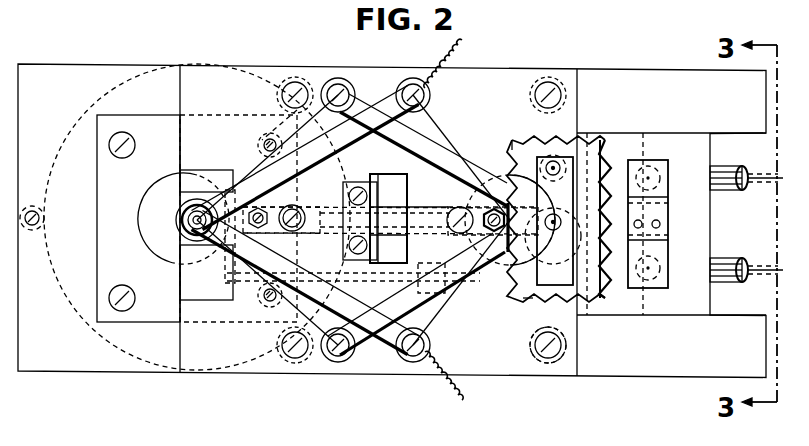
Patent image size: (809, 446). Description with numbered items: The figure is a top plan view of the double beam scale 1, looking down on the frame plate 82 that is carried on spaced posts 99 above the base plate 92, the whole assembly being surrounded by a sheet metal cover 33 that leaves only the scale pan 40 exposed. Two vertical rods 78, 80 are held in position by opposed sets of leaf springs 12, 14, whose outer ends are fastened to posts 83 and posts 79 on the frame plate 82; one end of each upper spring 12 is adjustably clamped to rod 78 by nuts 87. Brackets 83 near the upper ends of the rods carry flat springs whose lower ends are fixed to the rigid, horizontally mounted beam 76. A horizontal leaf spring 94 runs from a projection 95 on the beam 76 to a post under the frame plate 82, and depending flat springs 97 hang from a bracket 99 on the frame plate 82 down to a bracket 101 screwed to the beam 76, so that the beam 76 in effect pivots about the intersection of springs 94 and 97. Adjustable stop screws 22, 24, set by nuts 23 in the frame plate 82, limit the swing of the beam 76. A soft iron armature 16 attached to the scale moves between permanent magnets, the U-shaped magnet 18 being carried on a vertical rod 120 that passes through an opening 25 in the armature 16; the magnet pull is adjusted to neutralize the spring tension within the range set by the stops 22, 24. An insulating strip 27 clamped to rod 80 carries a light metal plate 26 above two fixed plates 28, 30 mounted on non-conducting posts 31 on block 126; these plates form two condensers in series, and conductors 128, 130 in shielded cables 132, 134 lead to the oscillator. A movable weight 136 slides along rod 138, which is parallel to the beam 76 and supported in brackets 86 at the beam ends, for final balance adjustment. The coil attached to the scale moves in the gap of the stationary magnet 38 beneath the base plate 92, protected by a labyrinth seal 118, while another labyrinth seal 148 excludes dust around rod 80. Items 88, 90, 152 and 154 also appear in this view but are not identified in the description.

The double beam scale 1 is at (445, 127).
The leaf springs 12 is at (262, 140).
The leaf springs 14 is at (453, 165).
The armature 16 is at (507, 176).
The permanent magnet 18 is at (523, 138).
The stop screw 22 is at (262, 208).
The nuts 23 is at (262, 232).
The stop screw 24 is at (489, 210).
The opening 25 is at (578, 145).
The plate 26 is at (662, 188).
The insulating strip 27 is at (662, 232).
The fixed plate 28 is at (668, 258).
The fixed plate 30 is at (668, 208).
The posts 31 is at (657, 166).
The cover 33 is at (613, 157).
The stationary magnet 38 is at (95, 103).
The scale pan 40 is at (532, 340).
The beam 76 is at (407, 203).
The vertical rod 78 is at (197, 204).
The posts 79 is at (336, 82).
The vertical rod 80 is at (532, 252).
The frame plate 82 is at (207, 77).
The brackets 83 is at (415, 82).
The brackets 86 is at (230, 190).
The nuts 87 is at (188, 226).
The bracket 88 is at (206, 235).
The screws 90 is at (300, 77).
The base plate 92 is at (87, 74).
The horizontal leaf spring 94 is at (402, 230).
The projection 95 is at (294, 206).
The depending flat springs 97 is at (390, 182).
The posts 99 is at (353, 186).
The bracket 101 is at (290, 238).
The labyrinth seal 118 is at (150, 202).
The vertical rod 120 is at (597, 140).
The block 126 is at (628, 307).
The conductor 128 is at (764, 278).
The conductor 130 is at (764, 186).
The shielded cable 132 is at (714, 267).
The shielded cable 134 is at (717, 177).
The movable weight 136 is at (428, 296).
The rod 138 is at (350, 279).
The labyrinth seal 148 is at (533, 300).
The spring 152 is at (461, 404).
The spring 154 is at (463, 36).